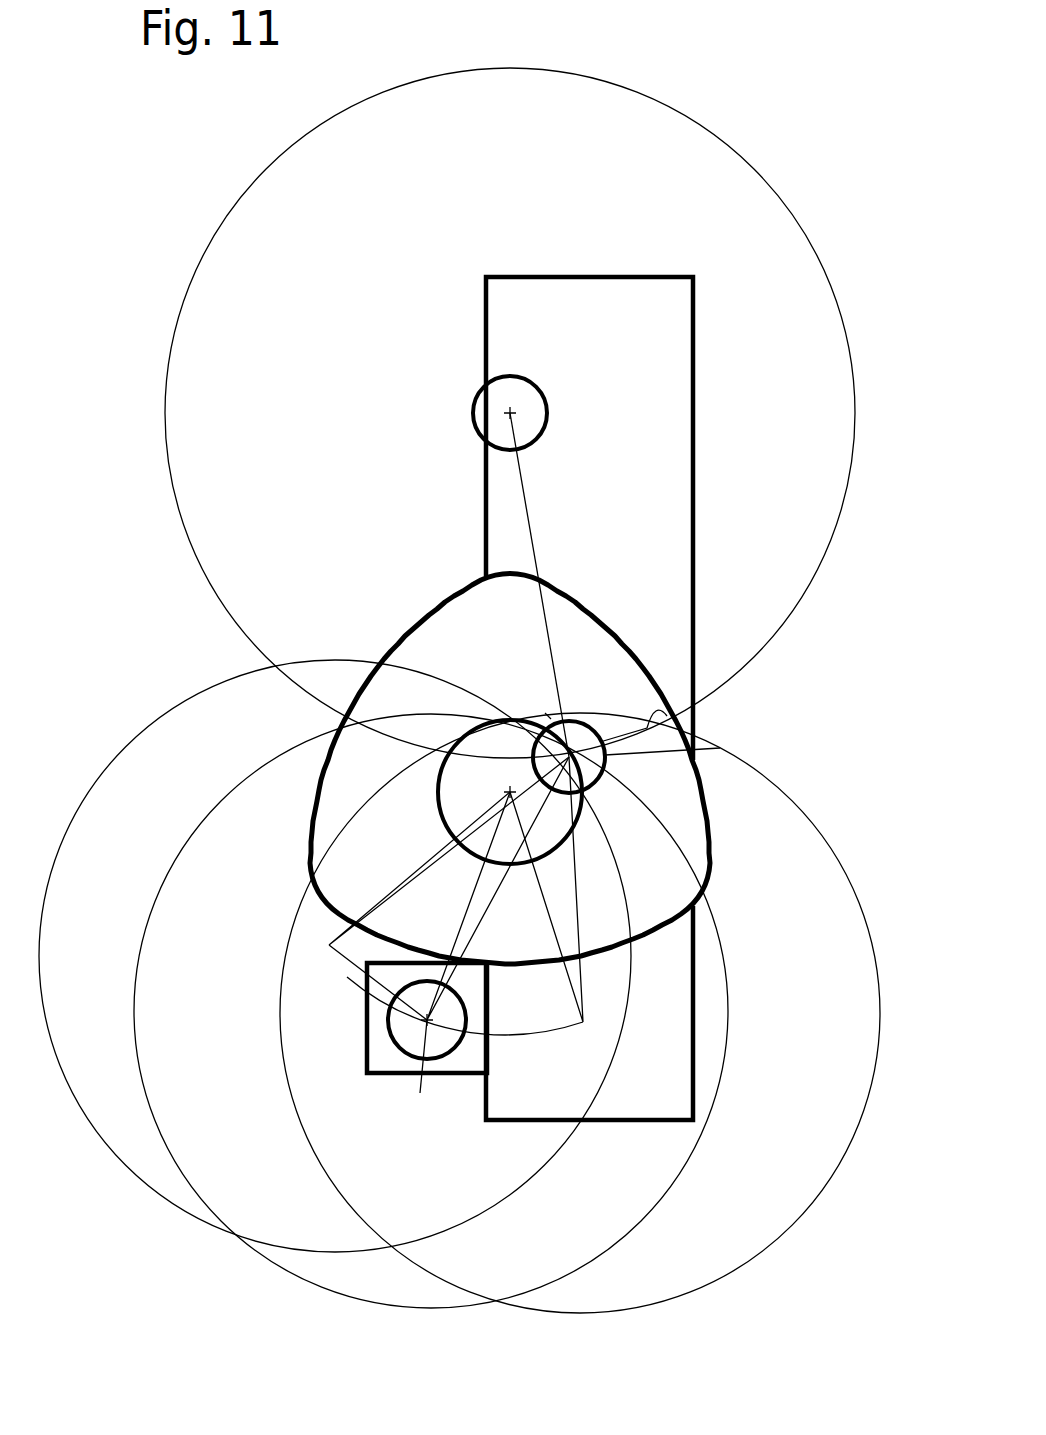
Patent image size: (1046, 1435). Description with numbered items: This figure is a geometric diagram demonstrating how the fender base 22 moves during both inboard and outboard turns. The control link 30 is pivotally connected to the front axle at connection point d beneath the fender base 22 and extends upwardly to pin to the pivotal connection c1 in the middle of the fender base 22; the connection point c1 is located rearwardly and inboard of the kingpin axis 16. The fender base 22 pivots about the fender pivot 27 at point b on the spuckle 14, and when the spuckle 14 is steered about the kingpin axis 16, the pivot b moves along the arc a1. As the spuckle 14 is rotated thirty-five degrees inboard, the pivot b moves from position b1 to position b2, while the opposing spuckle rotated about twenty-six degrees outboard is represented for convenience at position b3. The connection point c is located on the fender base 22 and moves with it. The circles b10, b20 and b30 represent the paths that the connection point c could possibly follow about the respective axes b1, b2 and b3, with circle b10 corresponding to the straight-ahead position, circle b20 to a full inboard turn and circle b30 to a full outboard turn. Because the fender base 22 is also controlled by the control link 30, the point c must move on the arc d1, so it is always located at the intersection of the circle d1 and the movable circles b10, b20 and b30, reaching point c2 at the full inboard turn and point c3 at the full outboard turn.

The arc d1 is at (259, 175).
The fender base 22 is at (694, 372).
The fender pivot 27 is at (468, 1076).
The connection point d is at (473, 413).
The control link 30 is at (526, 507).
The kingpin axis 16 is at (548, 858).
The rotor center point a is at (508, 793).
The connection point c is at (605, 765).
The pivotal connection c1 is at (720, 748).
The point c2 is at (667, 716).
The point c3 is at (548, 716).
The arc b30 is at (160, 716).
The arc b10 is at (273, 1262).
The arc b20 is at (745, 1270).
The point b is at (395, 1034).
The spuckle 14 is at (317, 1032).
The position b2 is at (584, 1025).
The position b3 is at (329, 945).
The arc a1 is at (347, 977).
The position b1 is at (421, 1093).